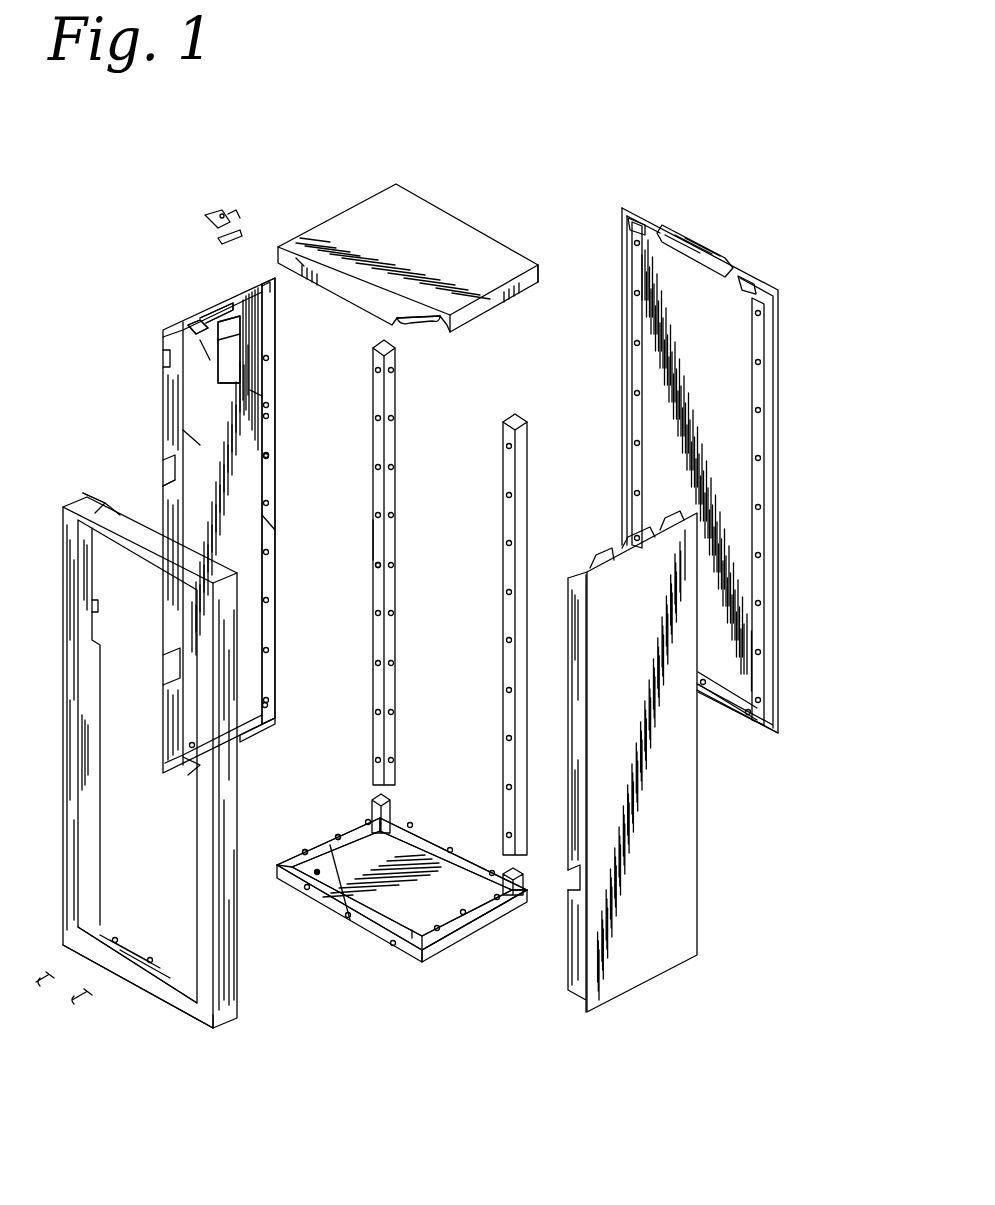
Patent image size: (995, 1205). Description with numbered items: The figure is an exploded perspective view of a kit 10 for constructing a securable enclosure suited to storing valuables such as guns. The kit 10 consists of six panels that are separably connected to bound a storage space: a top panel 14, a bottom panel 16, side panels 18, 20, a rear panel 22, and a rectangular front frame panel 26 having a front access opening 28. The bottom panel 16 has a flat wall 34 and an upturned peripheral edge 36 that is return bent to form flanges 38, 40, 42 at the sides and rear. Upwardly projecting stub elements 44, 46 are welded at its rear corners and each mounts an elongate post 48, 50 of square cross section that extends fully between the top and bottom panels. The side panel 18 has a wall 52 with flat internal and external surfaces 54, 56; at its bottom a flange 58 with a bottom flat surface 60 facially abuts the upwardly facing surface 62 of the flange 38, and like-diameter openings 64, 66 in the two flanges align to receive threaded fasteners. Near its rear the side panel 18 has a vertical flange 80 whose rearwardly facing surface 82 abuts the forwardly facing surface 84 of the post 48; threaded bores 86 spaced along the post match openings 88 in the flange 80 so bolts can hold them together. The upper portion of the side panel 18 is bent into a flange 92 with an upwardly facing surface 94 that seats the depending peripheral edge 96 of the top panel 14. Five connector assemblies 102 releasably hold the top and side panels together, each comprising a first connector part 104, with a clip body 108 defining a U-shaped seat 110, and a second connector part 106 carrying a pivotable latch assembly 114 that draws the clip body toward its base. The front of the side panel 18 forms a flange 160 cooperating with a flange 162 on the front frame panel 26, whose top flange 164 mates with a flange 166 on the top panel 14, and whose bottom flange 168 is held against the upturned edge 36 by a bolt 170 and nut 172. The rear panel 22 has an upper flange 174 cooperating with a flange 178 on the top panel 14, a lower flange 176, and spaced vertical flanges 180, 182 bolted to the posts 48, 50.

The kit 10 is at (606, 163).
The top panel 14 is at (424, 249).
The bottom panel 16 is at (430, 913).
The side panel 18 is at (222, 421).
The side panel 20 is at (648, 640).
The rear panel 22 is at (740, 340).
The front frame panel 26 is at (222, 945).
The front access opening 28 is at (200, 906).
The flat wall 34 is at (414, 932).
The upturned peripheral edge 36 is at (330, 905).
The flange 38 is at (312, 858).
The flange 40 is at (485, 908).
The flange 42 is at (430, 842).
The stub element 44 is at (395, 807).
The stub element 46 is at (524, 882).
The elongate post 48 is at (397, 637).
The elongate post 50 is at (520, 553).
The wall 52 is at (195, 442).
The internal surface 54 is at (258, 399).
The external surface 56 is at (206, 352).
The flange 58 is at (260, 729).
The bottom flat surface 60 is at (200, 762).
The upwardly facing surface 62 is at (330, 845).
The openings 64 is at (303, 852).
The openings 66 is at (258, 710).
The flange 80 is at (266, 522).
The rearwardly facing surface 82 is at (276, 484).
The forwardly facing surface 84 is at (375, 548).
The threaded bores 86 is at (380, 568).
The openings 88 is at (270, 415).
The flange 92 is at (236, 300).
The upwardly facing surface 94 is at (206, 320).
The peripheral edge 96 is at (300, 270).
The connector assemblies 102 is at (214, 235).
The first connector part 104 is at (212, 222).
The second connector part 106 is at (222, 364).
The clip body 108 is at (232, 215).
The U-shaped seat 110 is at (212, 238).
The latch assembly 114 is at (265, 292).
The flange 160 is at (168, 491).
The flange 162 is at (100, 647).
The top flange 164 is at (118, 525).
The flange 166 is at (400, 322).
The bottom flange 168 is at (128, 942).
The bolt 170 is at (80, 1003).
The nut 172 is at (315, 874).
The upper flange 174 is at (712, 258).
The lower flange 176 is at (730, 705).
The flange 178 is at (540, 284).
The flange 180 is at (632, 262).
The flange 182 is at (762, 332).